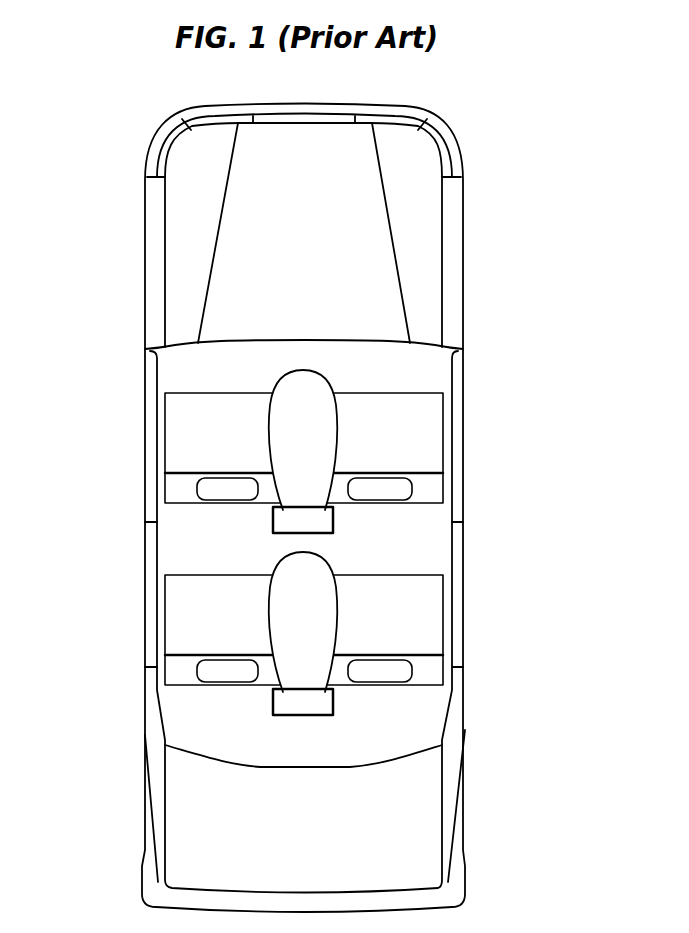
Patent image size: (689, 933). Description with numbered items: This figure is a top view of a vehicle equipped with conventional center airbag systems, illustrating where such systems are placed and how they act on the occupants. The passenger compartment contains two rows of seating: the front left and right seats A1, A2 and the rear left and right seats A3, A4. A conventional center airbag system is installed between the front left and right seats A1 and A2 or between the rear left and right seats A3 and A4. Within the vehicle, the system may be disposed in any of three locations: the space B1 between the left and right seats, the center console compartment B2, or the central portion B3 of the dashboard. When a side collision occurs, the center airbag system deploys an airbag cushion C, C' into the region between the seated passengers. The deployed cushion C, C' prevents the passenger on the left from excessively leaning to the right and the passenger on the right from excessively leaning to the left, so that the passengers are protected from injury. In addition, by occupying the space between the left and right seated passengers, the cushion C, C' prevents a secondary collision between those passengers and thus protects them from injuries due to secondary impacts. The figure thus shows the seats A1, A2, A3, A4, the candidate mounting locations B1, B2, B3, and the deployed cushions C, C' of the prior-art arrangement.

The front left seat A1 is at (187, 437).
The front right seat A2 is at (420, 437).
The rear left seat A3 is at (187, 627).
The rear right seat A4 is at (420, 627).
The space between the left and right seats B1 is at (318, 704).
The center console compartment B2 is at (322, 520).
The central portion of the dashboard B3 is at (303, 358).
The airbag cushion C is at (459, 566).
The airbag cushion C' is at (458, 345).